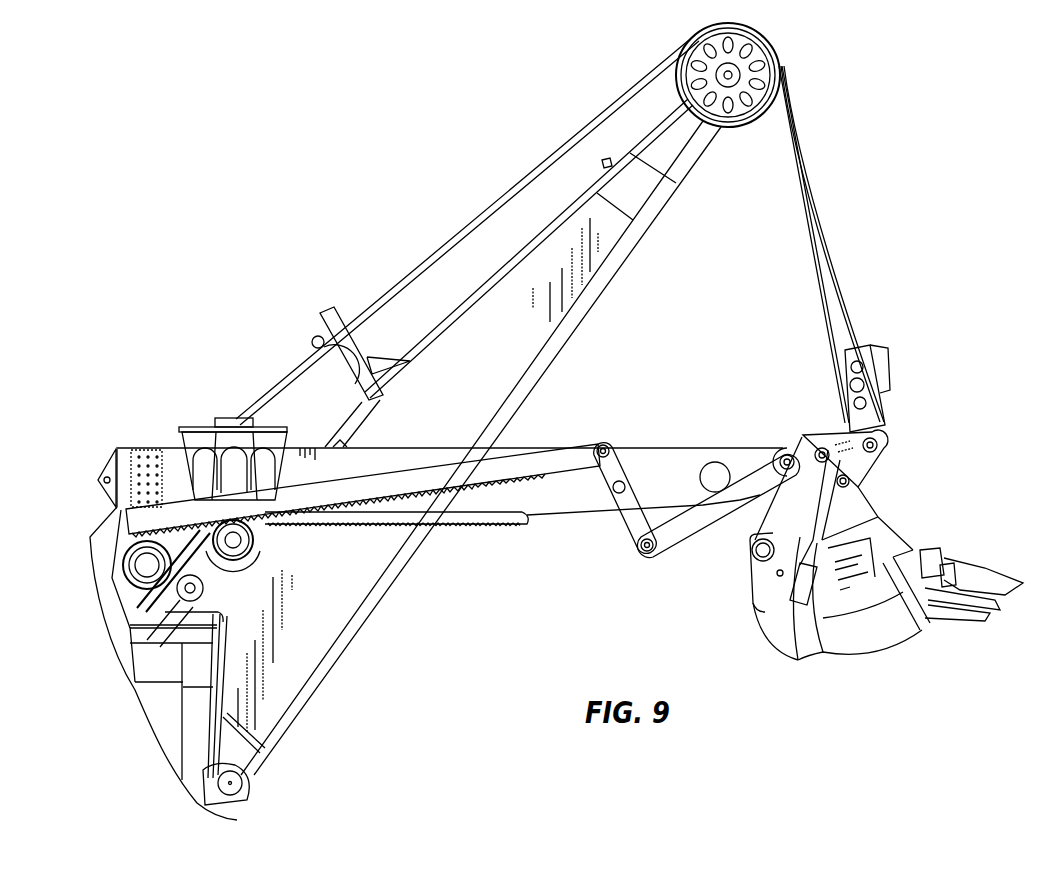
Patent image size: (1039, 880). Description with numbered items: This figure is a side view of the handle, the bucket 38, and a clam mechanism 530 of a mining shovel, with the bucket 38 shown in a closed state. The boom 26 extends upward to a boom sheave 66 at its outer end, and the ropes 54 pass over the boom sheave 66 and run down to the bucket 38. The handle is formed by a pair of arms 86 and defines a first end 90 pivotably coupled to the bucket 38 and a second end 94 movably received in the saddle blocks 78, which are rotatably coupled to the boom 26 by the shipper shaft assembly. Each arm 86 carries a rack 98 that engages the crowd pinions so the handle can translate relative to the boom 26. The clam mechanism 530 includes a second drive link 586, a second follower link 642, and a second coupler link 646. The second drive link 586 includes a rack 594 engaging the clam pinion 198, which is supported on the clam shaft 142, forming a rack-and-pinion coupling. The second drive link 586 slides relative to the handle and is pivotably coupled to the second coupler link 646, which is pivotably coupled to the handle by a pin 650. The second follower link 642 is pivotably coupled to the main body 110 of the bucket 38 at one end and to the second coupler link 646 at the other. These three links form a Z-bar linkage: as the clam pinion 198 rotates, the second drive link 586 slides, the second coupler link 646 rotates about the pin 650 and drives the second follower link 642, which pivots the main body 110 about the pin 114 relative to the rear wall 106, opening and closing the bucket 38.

The boom 26 is at (538, 210).
The ropes 54 is at (452, 238).
The boom sheave 66 is at (763, 53).
The saddle blocks 78 is at (202, 440).
The second end 94 is at (112, 448).
The arms 86 is at (693, 462).
The second drive link 586 is at (433, 480).
The rack 594 is at (498, 492).
The rack 98 is at (460, 523).
The clam shaft 142 is at (245, 540).
The clam pinion 198 is at (240, 560).
The clam mechanism 530 is at (636, 456).
The second coupler link 646 is at (633, 525).
The pin 650 is at (614, 490).
The second follower link 642 is at (683, 527).
The first end 90 is at (773, 460).
The pin 114 is at (857, 482).
The rear wall 106 is at (777, 597).
The main body 110 is at (858, 627).
The bucket 38 is at (912, 659).